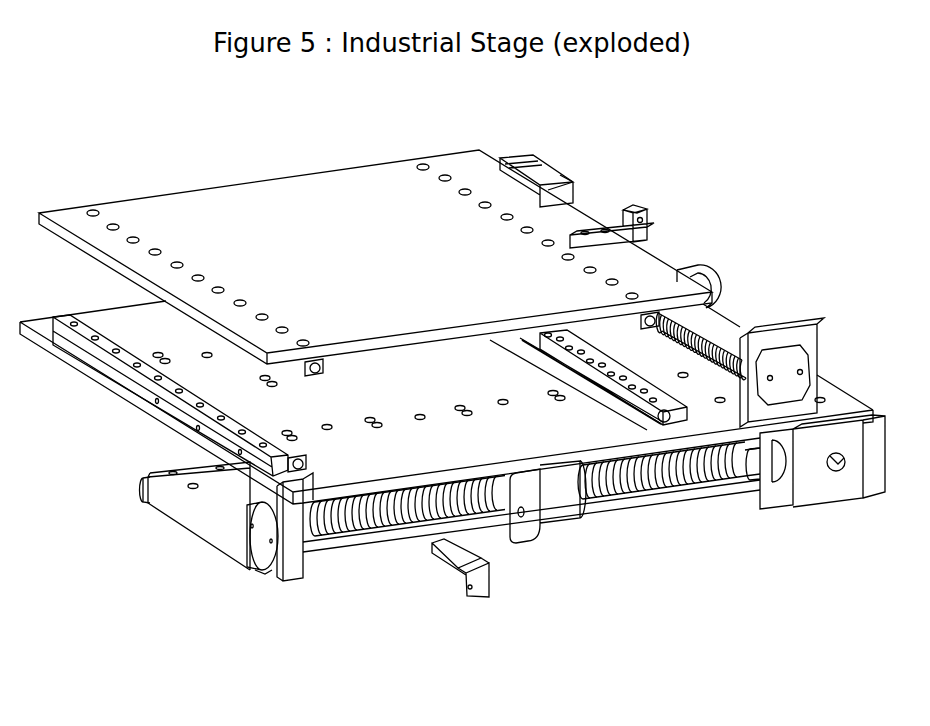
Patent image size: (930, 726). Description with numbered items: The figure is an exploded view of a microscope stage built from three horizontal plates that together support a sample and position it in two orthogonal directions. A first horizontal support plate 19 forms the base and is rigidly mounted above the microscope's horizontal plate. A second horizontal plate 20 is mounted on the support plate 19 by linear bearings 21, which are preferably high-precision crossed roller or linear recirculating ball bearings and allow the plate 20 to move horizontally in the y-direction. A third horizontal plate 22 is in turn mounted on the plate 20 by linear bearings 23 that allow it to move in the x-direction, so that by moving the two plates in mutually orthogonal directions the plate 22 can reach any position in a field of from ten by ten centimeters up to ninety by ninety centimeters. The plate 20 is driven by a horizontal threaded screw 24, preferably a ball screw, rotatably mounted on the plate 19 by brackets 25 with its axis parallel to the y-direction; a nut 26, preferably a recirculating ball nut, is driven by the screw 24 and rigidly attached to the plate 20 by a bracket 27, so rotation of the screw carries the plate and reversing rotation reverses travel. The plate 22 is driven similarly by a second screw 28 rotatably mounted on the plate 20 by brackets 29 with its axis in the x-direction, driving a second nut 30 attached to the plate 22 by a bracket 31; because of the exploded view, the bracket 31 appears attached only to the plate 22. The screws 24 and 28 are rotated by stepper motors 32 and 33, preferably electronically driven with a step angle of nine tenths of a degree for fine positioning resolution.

The first horizontal support plate 19 is at (200, 540).
The second horizontal plate 20 is at (97, 312).
The linear bearings 21 is at (148, 485).
The third horizontal plate 22 is at (205, 186).
The linear bearings 23 is at (617, 403).
The horizontal threaded screw 24 is at (695, 492).
The brackets 25 is at (300, 585).
The nut 26 is at (562, 525).
The bracket 27 is at (486, 606).
The second screw 28 is at (735, 327).
The brackets 29 is at (568, 182).
The second nut 30 is at (700, 262).
The bracket 31 is at (645, 207).
The stepper motor 32 is at (870, 504).
The stepper motor 33 is at (525, 162).